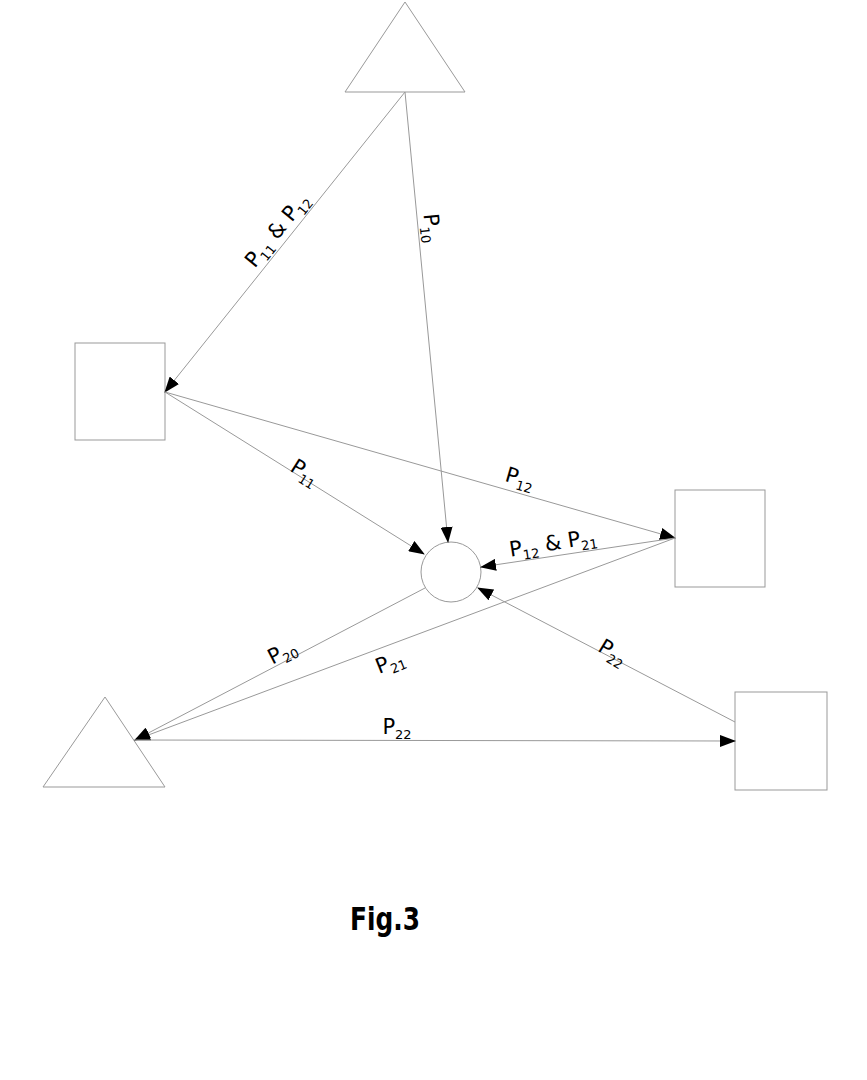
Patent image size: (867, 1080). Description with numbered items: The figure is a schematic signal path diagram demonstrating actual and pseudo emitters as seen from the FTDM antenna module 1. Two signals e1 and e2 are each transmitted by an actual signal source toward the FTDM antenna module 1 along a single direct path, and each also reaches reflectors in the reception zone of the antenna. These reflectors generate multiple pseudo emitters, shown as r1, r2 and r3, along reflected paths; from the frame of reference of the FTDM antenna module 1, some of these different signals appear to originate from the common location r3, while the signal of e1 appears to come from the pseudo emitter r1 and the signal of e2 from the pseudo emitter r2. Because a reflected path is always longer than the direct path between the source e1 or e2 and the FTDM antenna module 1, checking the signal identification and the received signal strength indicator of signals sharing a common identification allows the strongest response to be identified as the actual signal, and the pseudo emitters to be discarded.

The FTDM antenna module 1 is at (451, 572).
The signal e1 is at (405, 47).
The signal e2 is at (104, 742).
The pseudo emitter r1 is at (120, 391).
The pseudo emitter r2 is at (781, 741).
The common location r3 is at (720, 538).